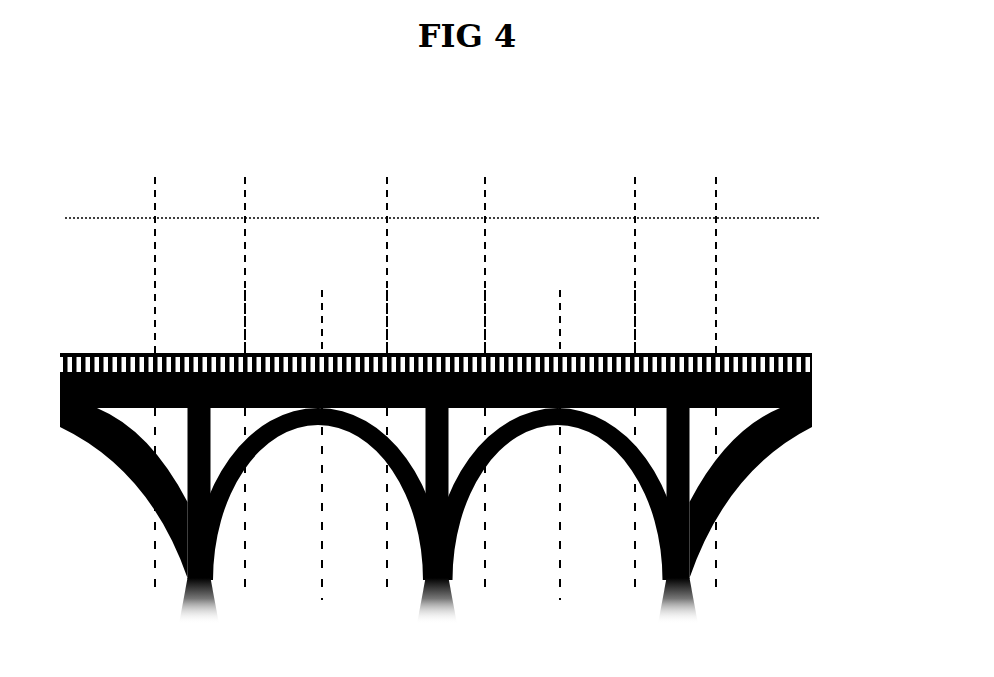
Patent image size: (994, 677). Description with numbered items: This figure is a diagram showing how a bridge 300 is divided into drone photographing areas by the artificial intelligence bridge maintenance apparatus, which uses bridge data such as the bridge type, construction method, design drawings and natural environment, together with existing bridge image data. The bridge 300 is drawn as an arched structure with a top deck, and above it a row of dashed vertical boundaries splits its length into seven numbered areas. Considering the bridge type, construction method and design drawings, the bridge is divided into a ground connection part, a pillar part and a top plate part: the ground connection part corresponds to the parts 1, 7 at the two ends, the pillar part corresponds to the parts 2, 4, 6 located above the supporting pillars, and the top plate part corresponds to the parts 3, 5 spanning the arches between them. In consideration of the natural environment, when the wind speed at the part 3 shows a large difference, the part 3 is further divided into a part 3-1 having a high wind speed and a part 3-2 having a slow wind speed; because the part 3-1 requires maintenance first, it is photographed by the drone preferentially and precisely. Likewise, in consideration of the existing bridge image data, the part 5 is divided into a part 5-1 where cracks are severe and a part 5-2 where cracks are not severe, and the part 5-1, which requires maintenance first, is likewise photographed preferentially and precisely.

The bridge-like structure 300 is at (812, 388).
The part 1 is at (126, 387).
The part 2 is at (200, 387).
The part 3 is at (316, 387).
The part 3-1 is at (283, 445).
The part 3-2 is at (354, 445).
The part 4 is at (436, 387).
The part 5 is at (560, 387).
The part 5-1 is at (522, 445).
The part 5-2 is at (597, 445).
The part 6 is at (675, 387).
The part 7 is at (751, 387).